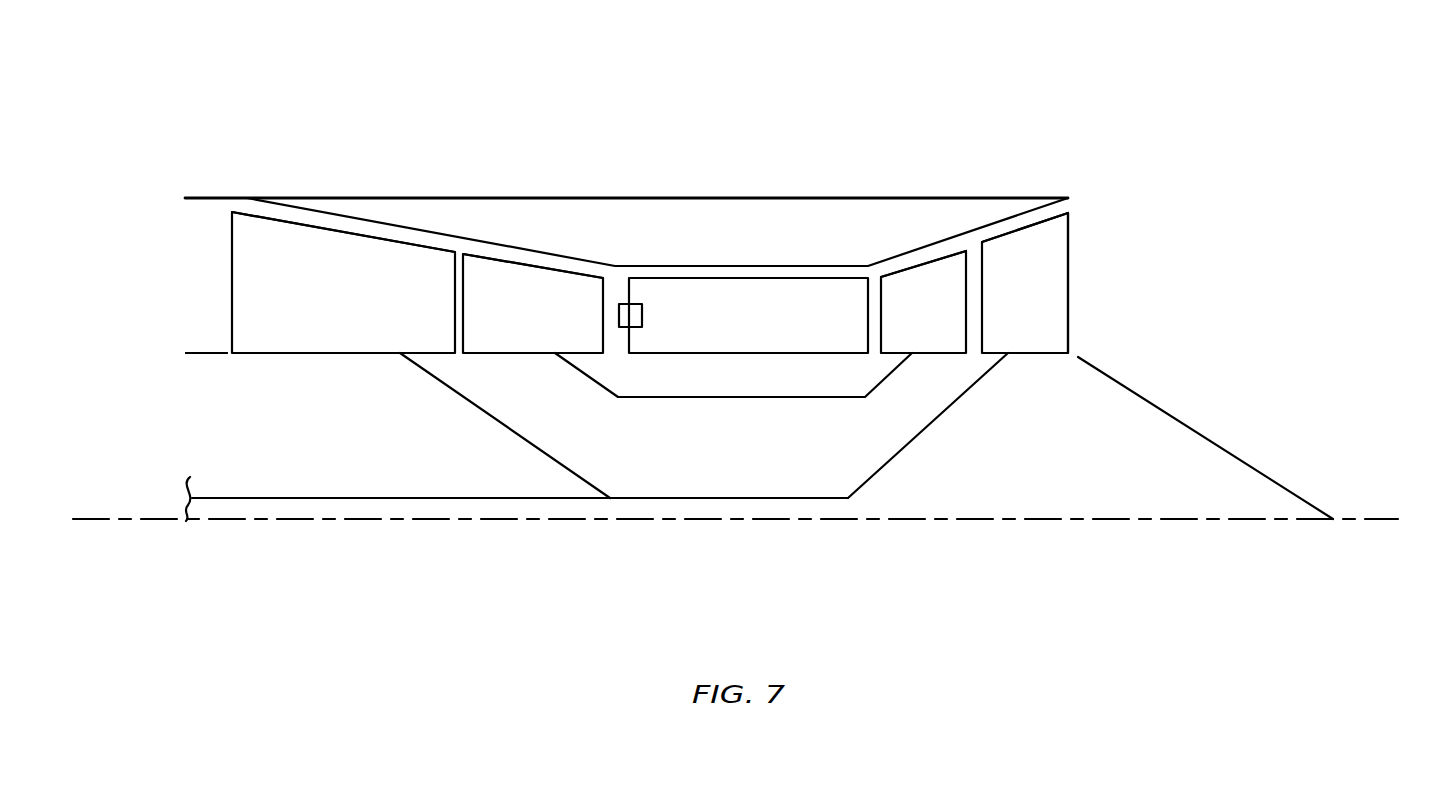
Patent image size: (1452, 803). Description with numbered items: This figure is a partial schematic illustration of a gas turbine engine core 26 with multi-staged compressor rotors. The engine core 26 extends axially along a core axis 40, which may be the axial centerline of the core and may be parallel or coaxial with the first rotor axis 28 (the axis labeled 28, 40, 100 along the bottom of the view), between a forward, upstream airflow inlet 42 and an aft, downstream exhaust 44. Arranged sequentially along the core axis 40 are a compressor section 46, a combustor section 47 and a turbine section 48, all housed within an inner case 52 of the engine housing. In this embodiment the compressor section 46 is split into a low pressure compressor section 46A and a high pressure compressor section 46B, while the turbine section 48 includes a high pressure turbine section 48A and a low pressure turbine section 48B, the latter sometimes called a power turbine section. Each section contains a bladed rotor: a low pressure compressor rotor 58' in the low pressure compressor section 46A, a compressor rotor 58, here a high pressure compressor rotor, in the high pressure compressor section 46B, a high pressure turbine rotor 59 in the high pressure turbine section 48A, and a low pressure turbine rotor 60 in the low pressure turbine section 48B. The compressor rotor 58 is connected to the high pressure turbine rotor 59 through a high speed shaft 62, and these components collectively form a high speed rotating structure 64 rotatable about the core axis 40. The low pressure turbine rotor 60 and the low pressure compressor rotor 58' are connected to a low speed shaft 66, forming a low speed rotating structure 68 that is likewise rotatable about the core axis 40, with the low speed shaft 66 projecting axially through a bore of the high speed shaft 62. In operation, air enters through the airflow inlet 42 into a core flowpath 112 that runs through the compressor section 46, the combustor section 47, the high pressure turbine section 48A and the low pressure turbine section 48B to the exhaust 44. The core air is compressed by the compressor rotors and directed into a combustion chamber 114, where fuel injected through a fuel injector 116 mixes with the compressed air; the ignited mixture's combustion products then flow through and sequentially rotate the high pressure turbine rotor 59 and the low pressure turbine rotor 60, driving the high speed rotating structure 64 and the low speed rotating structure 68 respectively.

The engine core 26 is at (718, 118).
The first rotor axis 28 is at (758, 545).
The core axis 40 is at (758, 545).
The axis 100 is at (1395, 521).
The airflow inlet 42 is at (186, 288).
The exhaust 44 is at (1089, 286).
The compressor section 46 is at (417, 177).
The low pressure compressor section 46A is at (355, 225).
The high pressure compressor section 46B is at (533, 209).
The combustor section 47 is at (744, 254).
The turbine section 48 is at (974, 176).
The high pressure turbine section 48A is at (925, 248).
The low pressure turbine section 48B is at (1020, 191).
The inner case 52 is at (636, 186).
The compressor rotor 58 is at (533, 340).
The low pressure compressor rotor 58' is at (343, 323).
The high pressure turbine rotor 59 is at (935, 353).
The low pressure turbine rotor 60 is at (1032, 353).
The high speed shaft 62 is at (753, 397).
The high speed rotating structure 64 is at (671, 415).
The low speed shaft 66 is at (703, 498).
The low speed rotating structure 68 is at (834, 515).
The core flowpath 112 is at (190, 247).
The combustion chamber 114 is at (818, 332).
The fuel injector 116 is at (642, 315).